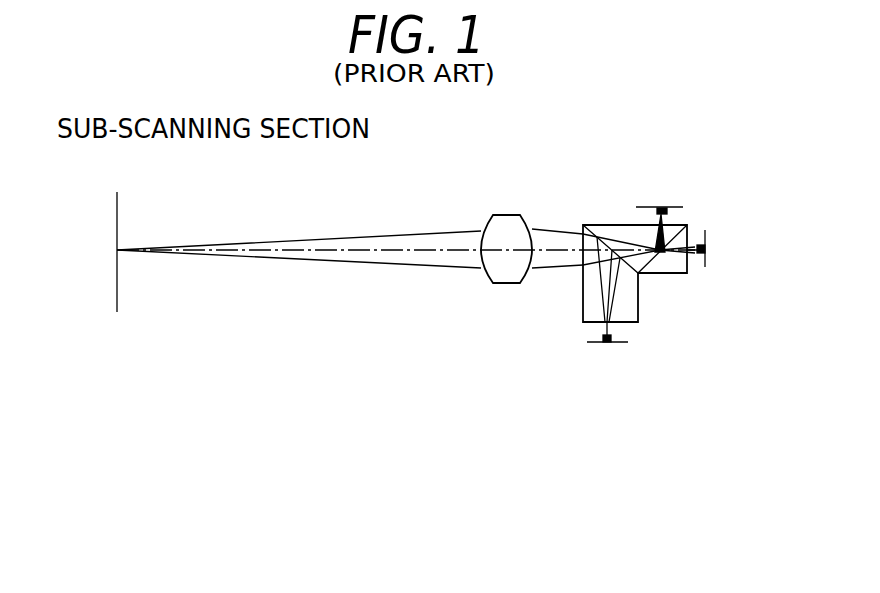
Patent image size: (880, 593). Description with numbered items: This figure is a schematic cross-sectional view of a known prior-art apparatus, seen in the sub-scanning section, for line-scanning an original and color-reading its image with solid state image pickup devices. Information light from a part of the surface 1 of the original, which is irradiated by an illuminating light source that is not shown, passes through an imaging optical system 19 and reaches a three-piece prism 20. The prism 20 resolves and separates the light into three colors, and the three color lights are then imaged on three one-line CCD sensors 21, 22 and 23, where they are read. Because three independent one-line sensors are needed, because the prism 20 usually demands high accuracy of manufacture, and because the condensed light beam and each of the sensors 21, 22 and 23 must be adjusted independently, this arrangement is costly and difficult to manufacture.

The surface of an original 1 is at (117, 206).
The imaging optical system 19 is at (512, 225).
The three-piece (3P) prism 20 is at (627, 302).
The one-line CCD sensor 21 is at (682, 207).
The one-line CCD sensor 22 is at (705, 262).
The one-line CCD sensor 23 is at (623, 342).